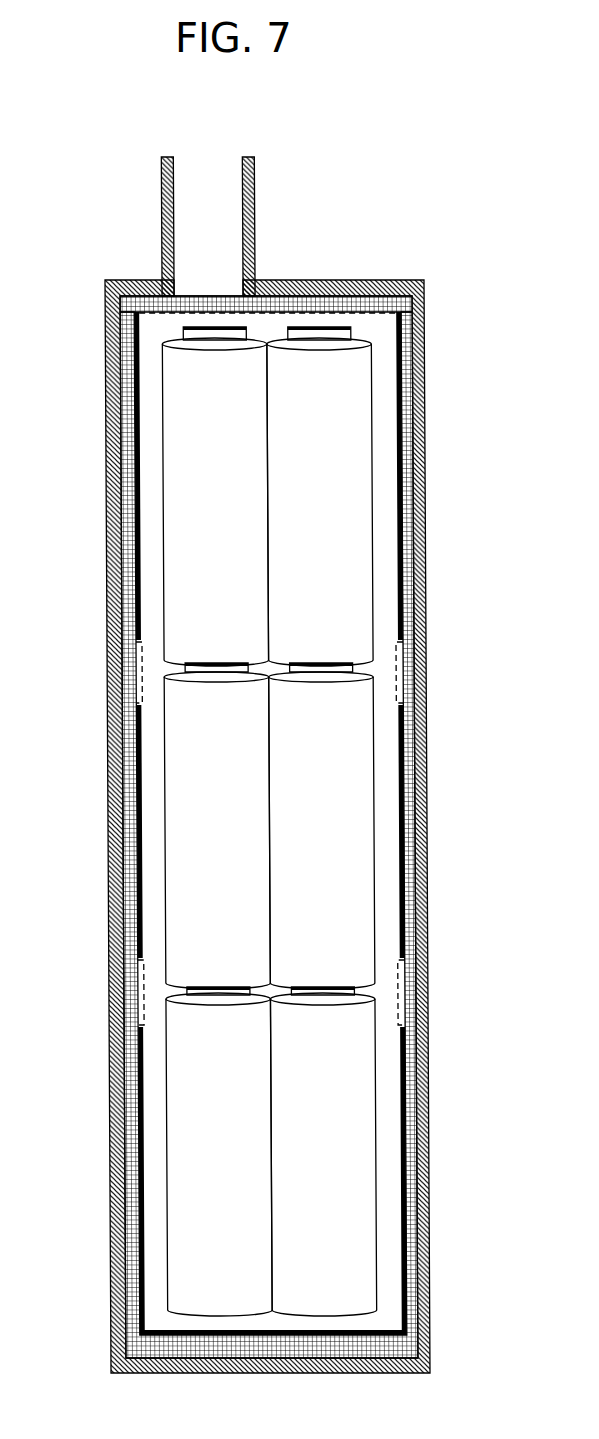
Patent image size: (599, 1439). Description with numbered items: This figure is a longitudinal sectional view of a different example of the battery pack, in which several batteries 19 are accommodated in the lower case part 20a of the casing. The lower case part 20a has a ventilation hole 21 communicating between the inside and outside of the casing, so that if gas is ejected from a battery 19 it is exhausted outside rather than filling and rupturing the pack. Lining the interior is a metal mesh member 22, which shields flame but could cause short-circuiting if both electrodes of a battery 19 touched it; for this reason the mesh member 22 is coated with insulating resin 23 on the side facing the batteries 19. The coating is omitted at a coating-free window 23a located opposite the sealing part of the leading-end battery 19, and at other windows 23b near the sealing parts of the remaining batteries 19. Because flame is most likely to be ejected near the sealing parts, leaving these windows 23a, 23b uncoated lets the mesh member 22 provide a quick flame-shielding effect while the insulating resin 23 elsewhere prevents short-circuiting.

The battery 19 is at (200, 443).
The lower case part 20a is at (420, 425).
The ventilation hole 21 is at (207, 180).
The mesh member 22 is at (145, 312).
The insulating resin 23 is at (403, 528).
The coating-free window 23a is at (282, 312).
The window 23b is at (407, 670).